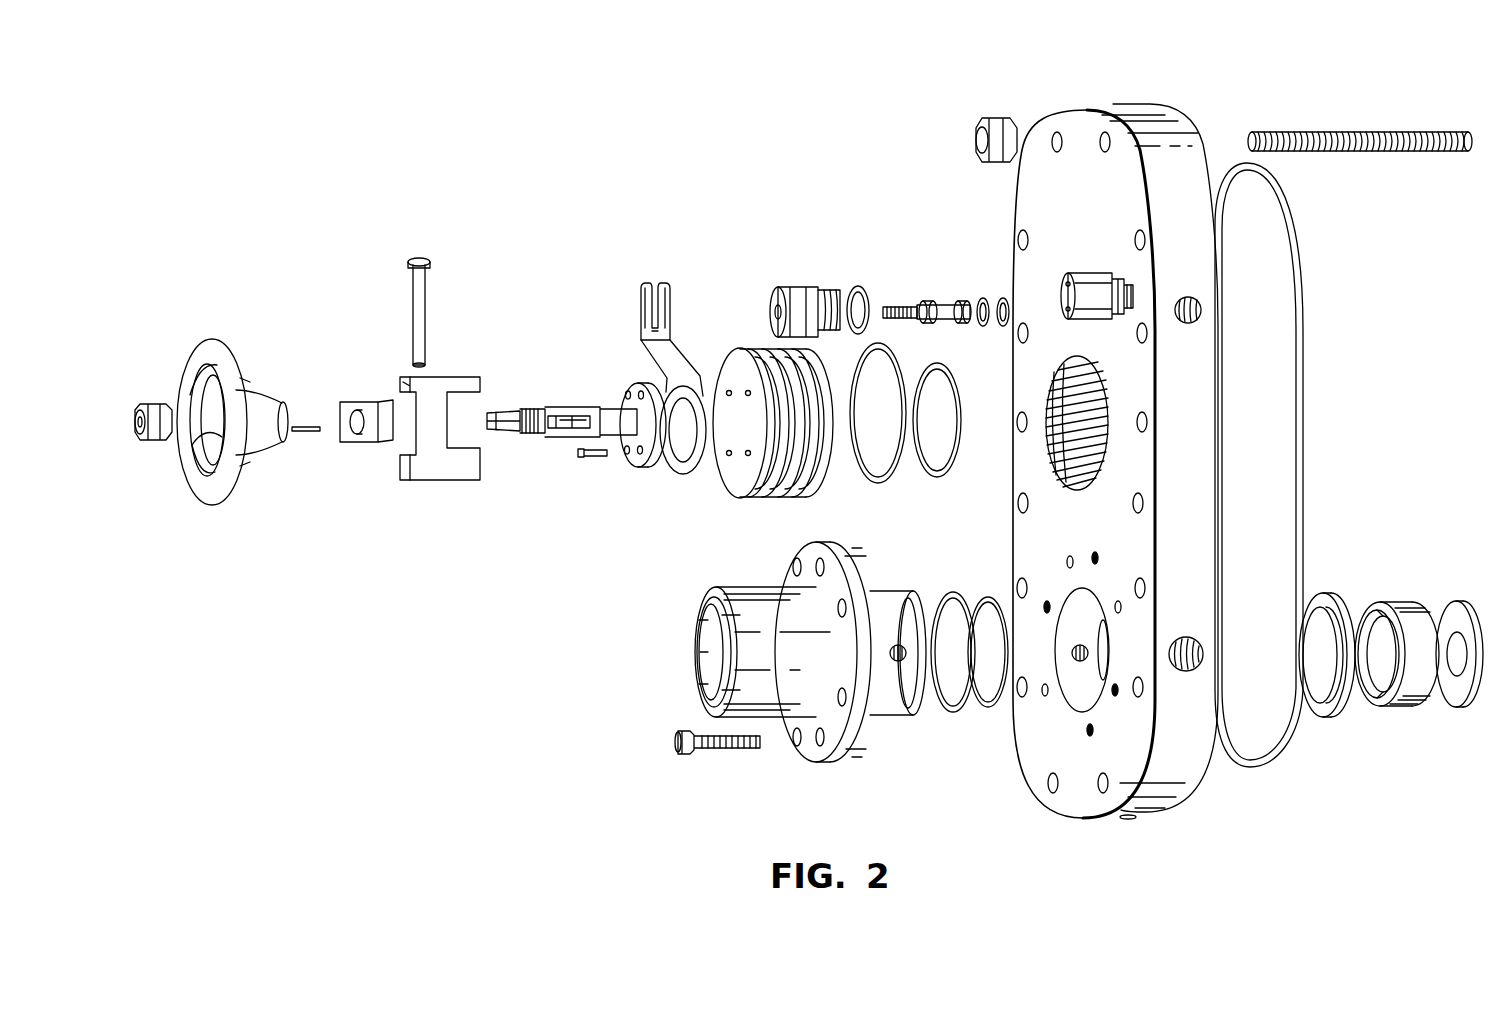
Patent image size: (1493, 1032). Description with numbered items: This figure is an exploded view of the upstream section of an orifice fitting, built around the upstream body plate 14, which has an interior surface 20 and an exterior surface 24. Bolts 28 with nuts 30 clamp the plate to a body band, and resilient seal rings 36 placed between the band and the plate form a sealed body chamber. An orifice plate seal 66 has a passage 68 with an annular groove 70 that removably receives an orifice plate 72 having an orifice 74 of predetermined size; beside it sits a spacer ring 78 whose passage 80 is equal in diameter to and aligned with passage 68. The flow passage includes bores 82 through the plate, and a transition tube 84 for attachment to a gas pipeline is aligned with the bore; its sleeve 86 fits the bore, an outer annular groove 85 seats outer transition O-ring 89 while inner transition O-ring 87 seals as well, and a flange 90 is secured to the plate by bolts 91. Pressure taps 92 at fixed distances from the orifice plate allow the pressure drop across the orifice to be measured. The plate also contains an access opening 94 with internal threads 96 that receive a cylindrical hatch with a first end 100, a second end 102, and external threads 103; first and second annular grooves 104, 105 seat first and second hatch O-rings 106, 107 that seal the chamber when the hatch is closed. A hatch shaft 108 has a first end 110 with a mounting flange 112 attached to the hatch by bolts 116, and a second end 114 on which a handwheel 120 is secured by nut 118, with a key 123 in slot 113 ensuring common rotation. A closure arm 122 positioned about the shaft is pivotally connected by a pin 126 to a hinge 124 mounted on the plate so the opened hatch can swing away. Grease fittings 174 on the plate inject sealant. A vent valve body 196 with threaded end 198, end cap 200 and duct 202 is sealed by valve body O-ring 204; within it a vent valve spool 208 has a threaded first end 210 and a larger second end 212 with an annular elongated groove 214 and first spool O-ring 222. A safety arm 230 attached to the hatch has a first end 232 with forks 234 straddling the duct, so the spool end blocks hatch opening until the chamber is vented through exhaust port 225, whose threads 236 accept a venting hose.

The upstream body plate 14 is at (1113, 109).
The interior surface 20 is at (1200, 155).
The exterior surface 24 is at (1040, 198).
The bolts 28 is at (1462, 130).
The nuts 30 is at (984, 122).
The resilient seal rings 36 is at (1303, 262).
The orifice plate seal 66 is at (1408, 602).
The passage 68 is at (1375, 612).
The annular groove 70 is at (1385, 708).
The orifice plate 72 is at (1458, 604).
The orifice 74 is at (1460, 688).
The spacer ring 78 is at (1324, 712).
The passage 80 is at (1306, 630).
The bores 82 is at (1085, 693).
The transition tubes 84 is at (750, 598).
The outer annular groove 85 is at (901, 592).
The sleeve 86 is at (893, 693).
The inner transition O-ring 87 is at (991, 600).
The outer transition O-ring 89 is at (954, 595).
The flange 90 is at (806, 553).
The bolts 91 is at (675, 741).
The pressure taps 92 is at (1083, 660).
The access opening 94 is at (1075, 407).
The internal threads 96 is at (1062, 468).
The first end 100 is at (831, 352).
The second end 102 is at (762, 342).
The external threads 103 is at (814, 484).
The first annular groove 104 is at (825, 477).
The second annular groove 105 is at (744, 474).
The first hatch O-ring 106 is at (946, 366).
The second hatch O-ring 107 is at (892, 478).
The hatch shaft 108 is at (592, 415).
The first end 110 is at (623, 417).
The mounting flange 112 is at (640, 395).
The slot 113 is at (550, 440).
The second end 114 is at (510, 410).
The bolts 116 is at (578, 456).
The nut 118 is at (155, 404).
The handwheel 120 is at (207, 353).
The closure arm 122 is at (352, 400).
The key 123 is at (300, 425).
The hinge 124 is at (400, 386).
The pin 126 is at (415, 285).
The grease fittings 174 is at (1072, 298).
The vent valve body 196 is at (786, 272).
The threaded end 198 is at (813, 276).
The end cap 200 is at (777, 300).
The duct 202 is at (770, 310).
The valve body O-ring 204 is at (860, 285).
The vent valve spool 208 is at (888, 306).
The threaded first end 210 is at (907, 322).
The second end 212 is at (968, 296).
The annular elongated groove 214 is at (940, 321).
The first spool O-ring 222 is at (1005, 330).
The exhaust port 225 is at (1202, 312).
The safety arm 230 is at (671, 465).
The first end 232 is at (630, 302).
The forks 234 is at (655, 287).
The threads 236 is at (1191, 323).